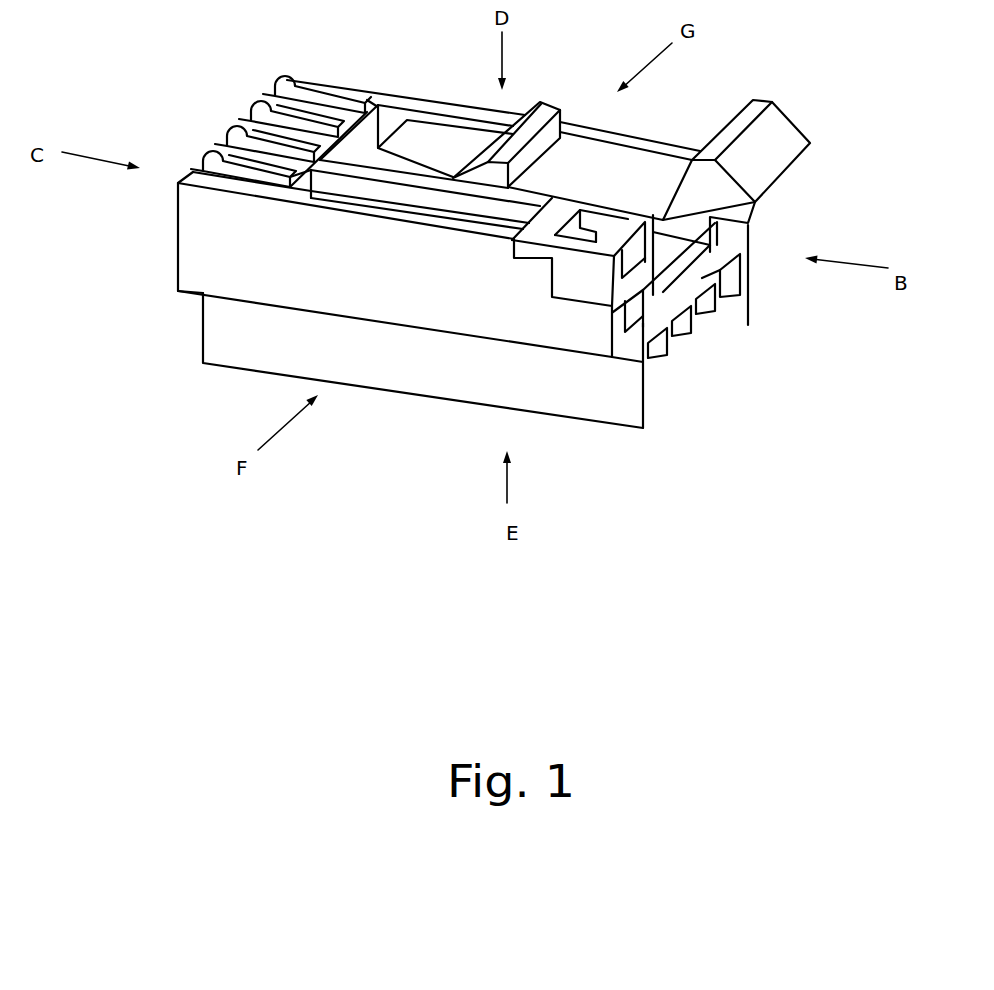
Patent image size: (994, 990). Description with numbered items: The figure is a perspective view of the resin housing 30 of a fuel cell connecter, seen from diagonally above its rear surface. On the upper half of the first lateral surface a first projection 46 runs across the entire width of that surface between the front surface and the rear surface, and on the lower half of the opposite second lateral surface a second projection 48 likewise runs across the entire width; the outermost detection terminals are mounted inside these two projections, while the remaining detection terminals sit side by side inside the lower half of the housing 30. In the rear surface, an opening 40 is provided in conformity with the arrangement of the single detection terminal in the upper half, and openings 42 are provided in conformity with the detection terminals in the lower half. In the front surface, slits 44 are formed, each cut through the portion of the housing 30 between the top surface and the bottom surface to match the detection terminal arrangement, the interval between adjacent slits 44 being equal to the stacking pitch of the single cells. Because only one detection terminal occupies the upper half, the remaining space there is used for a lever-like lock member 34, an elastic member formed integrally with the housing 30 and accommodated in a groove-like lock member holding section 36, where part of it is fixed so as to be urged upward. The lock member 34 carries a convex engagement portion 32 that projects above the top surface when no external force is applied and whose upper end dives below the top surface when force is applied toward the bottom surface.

The housing 30 is at (491, 318).
The engagement portion 32 is at (550, 108).
The lock member 34 is at (627, 150).
The lock member holding section 36 is at (743, 224).
The opening 40 is at (643, 323).
The openings 42 is at (733, 273).
The slits 44 is at (284, 80).
The first projection 46 is at (247, 292).
The second projection 48 is at (737, 227).